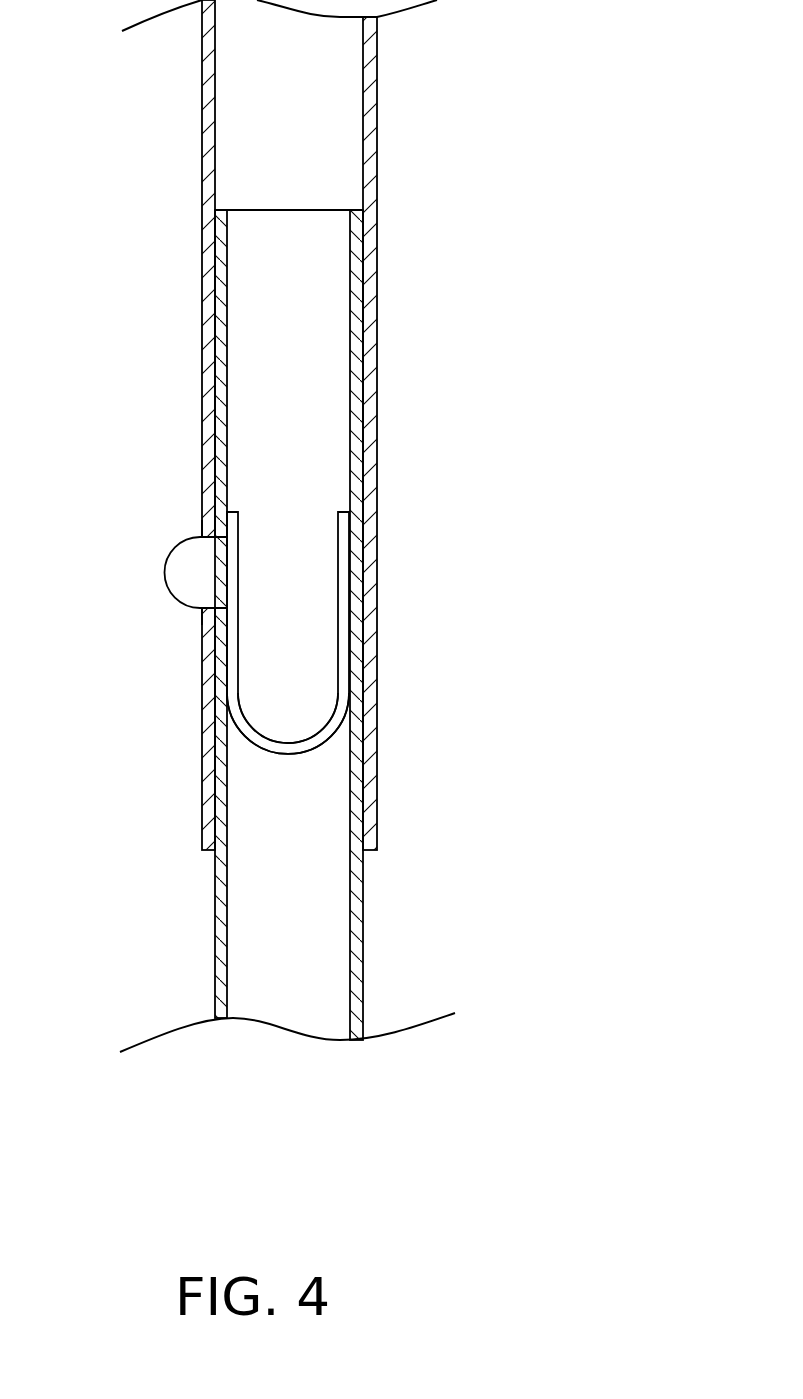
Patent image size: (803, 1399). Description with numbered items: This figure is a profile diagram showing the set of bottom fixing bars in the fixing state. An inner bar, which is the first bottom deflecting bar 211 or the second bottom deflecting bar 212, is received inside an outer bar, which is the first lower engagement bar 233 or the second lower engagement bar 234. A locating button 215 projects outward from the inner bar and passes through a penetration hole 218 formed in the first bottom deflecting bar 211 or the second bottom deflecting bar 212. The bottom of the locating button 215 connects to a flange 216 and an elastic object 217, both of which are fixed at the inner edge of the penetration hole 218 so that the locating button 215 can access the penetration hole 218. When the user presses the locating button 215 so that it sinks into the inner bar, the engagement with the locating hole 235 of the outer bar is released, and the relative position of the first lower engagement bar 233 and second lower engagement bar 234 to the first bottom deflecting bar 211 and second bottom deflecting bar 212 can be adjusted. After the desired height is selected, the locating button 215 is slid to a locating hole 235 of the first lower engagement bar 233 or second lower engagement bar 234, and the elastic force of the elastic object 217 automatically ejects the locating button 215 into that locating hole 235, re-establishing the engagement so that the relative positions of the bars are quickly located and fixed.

The first lower engagement bar 233 is at (216, 425).
The second lower engagement bar 234 is at (210, 403).
The locating hole 235 is at (205, 532).
The locating button 215 is at (178, 570).
The penetration hole 218 is at (215, 612).
The flange 216 is at (237, 520).
The elastic object 217 is at (297, 745).
The first bottom deflecting bar 211 is at (214, 625).
The second bottom deflecting bar 212 is at (218, 917).